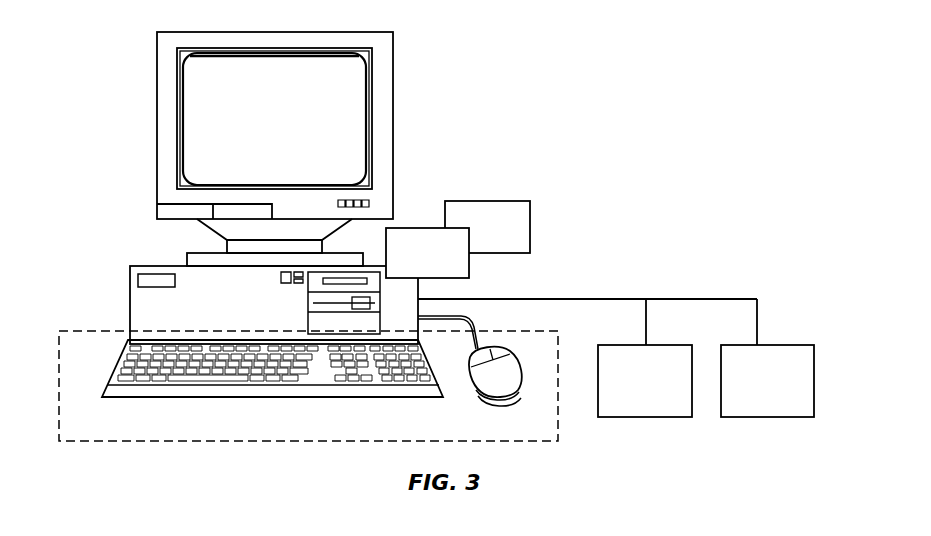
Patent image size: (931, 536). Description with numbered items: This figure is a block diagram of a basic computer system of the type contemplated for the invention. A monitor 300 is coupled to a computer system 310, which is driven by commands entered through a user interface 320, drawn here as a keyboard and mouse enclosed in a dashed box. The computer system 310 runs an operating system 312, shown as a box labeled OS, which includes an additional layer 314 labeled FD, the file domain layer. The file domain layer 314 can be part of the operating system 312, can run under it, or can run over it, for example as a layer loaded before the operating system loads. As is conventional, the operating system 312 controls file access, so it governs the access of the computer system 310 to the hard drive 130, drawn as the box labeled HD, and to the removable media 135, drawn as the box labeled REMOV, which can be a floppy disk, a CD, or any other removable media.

The monitor 300 is at (393, 95).
The computer system 310 is at (133, 266).
The user interface 320 is at (97, 337).
The operating system 312 is at (469, 262).
The file domain layer 314 is at (530, 201).
The hard disk 130 is at (665, 345).
The removable storage 135 is at (770, 345).